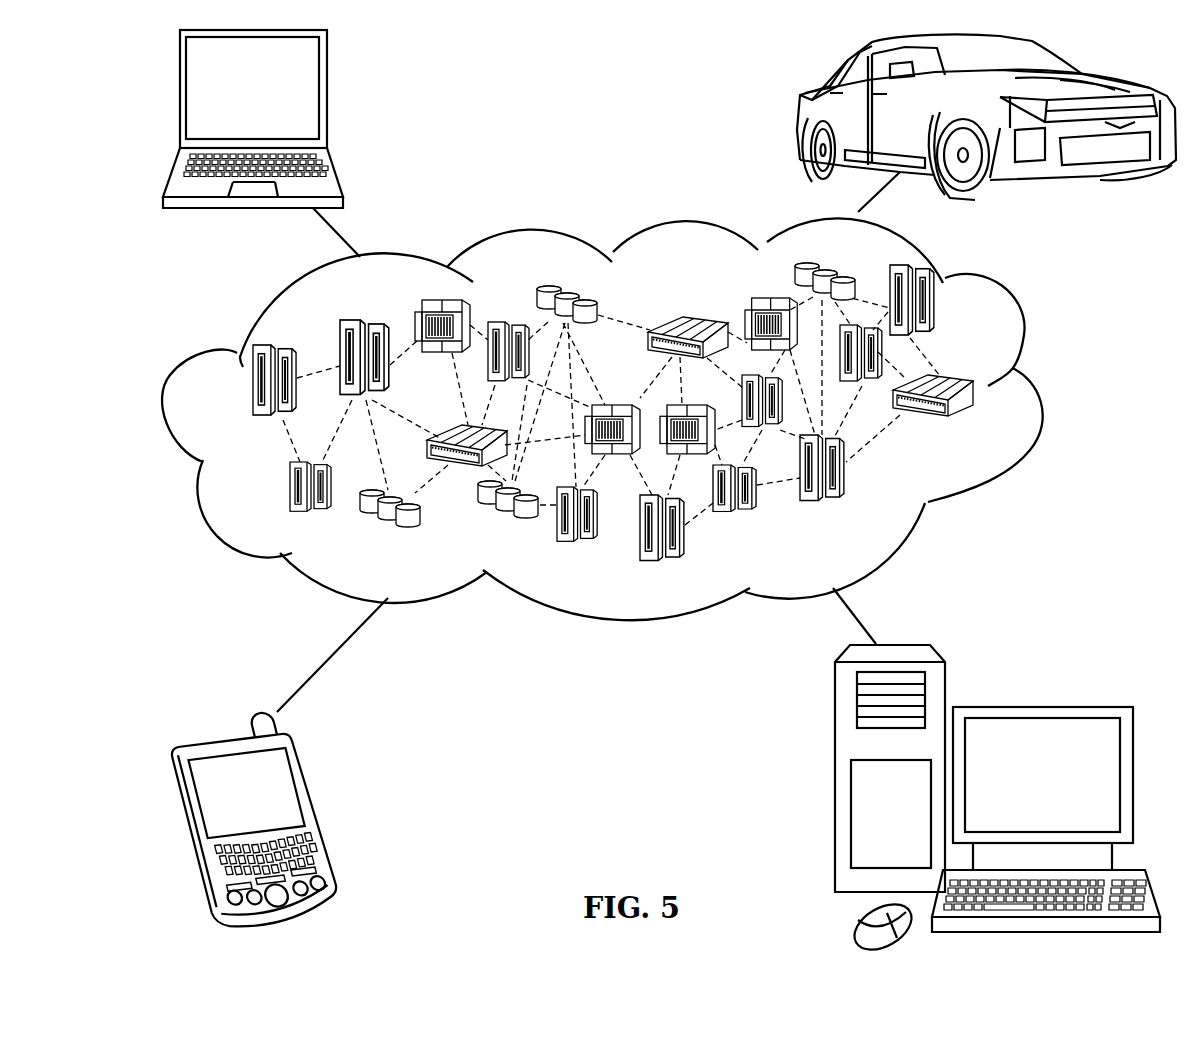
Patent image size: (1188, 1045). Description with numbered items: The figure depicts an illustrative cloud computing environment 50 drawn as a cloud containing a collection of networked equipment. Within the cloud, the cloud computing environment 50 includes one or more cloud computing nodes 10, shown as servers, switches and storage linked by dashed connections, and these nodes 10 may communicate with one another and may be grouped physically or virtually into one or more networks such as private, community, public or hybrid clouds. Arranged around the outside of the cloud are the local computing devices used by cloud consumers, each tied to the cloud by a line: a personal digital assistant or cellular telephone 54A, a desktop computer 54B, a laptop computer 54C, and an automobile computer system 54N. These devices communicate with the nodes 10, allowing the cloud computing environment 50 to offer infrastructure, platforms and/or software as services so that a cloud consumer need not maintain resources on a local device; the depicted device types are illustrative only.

The cloud computing environment 50 is at (1040, 392).
The cloud computing nodes 10 is at (978, 427).
The personal digital assistant (PDA) or cellular telephone 54A is at (318, 808).
The desktop computer 54B is at (1037, 706).
The laptop computer 54C is at (328, 98).
The automobile computer system 54N is at (800, 113).